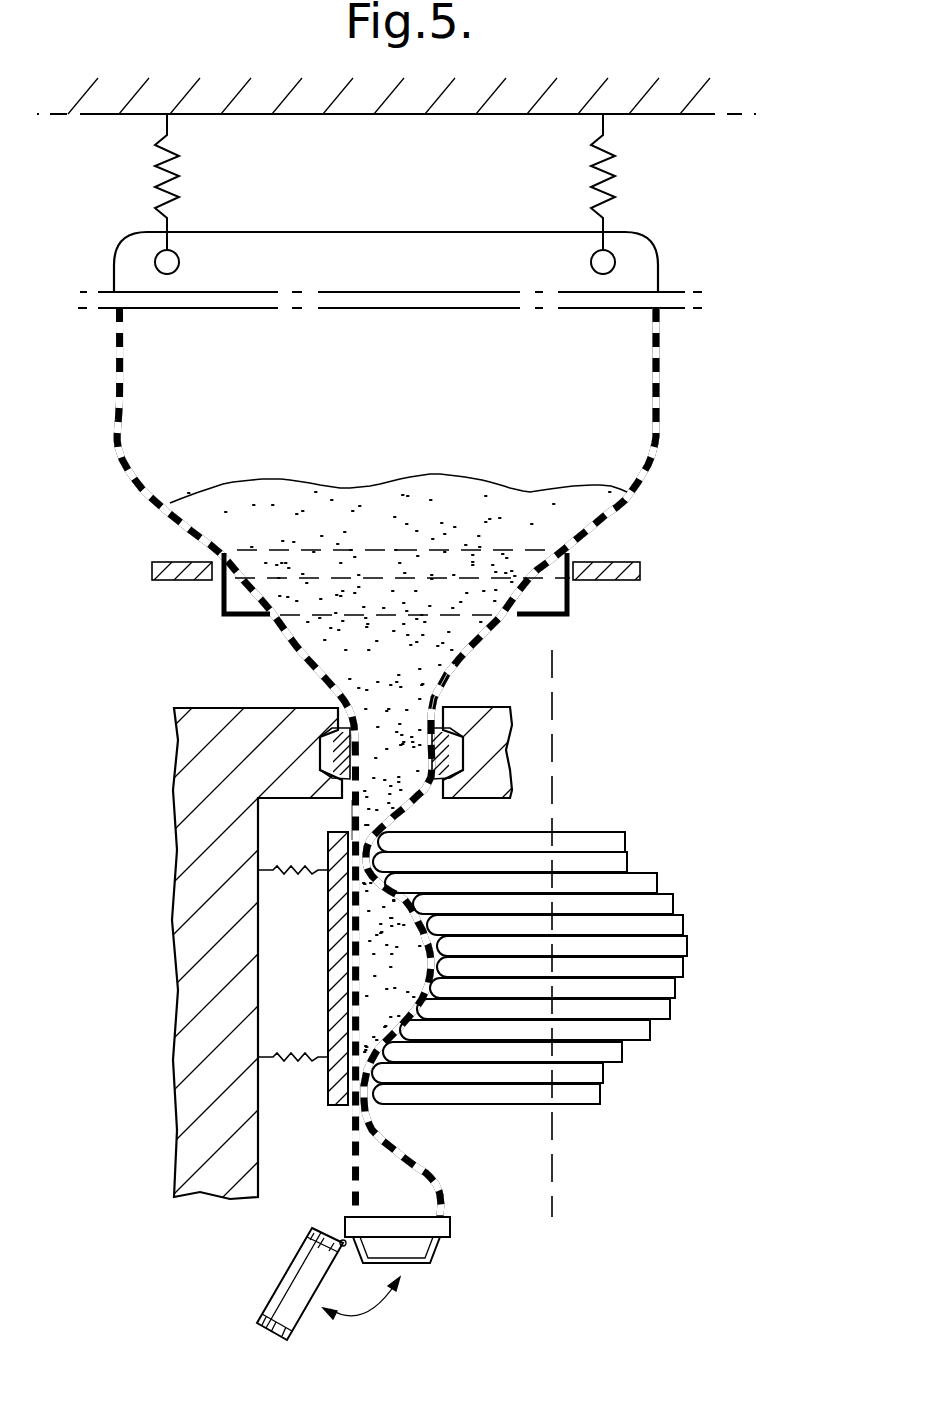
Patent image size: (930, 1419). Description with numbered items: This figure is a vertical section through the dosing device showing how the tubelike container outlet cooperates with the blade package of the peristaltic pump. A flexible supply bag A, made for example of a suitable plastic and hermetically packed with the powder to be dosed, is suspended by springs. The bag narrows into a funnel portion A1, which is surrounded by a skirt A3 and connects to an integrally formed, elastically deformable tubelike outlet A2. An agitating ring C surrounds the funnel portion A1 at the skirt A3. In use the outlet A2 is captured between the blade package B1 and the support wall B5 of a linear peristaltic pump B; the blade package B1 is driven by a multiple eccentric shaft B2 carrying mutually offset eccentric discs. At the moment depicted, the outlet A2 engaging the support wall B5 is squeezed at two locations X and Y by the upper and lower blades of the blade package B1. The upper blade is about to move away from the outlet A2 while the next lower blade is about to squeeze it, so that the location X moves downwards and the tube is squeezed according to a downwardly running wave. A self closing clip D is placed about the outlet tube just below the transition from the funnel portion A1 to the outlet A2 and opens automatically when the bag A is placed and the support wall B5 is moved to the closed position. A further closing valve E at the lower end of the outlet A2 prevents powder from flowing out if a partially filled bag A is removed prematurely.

The flexible supply bag A is at (688, 354).
The funnel portion A1 is at (483, 643).
The tubelike outlet A2 is at (355, 1165).
The skirt A3 is at (572, 595).
The linear peristaltic pump B is at (508, 1186).
The blade package B1 is at (660, 927).
The eccentric shaft B2 is at (550, 730).
The support wall B5 is at (263, 923).
The agitating ring C is at (152, 565).
The self closing clip D is at (327, 747).
The closing valve E is at (287, 1273).
The squeeze location X is at (347, 827).
The squeeze location Y is at (357, 1110).